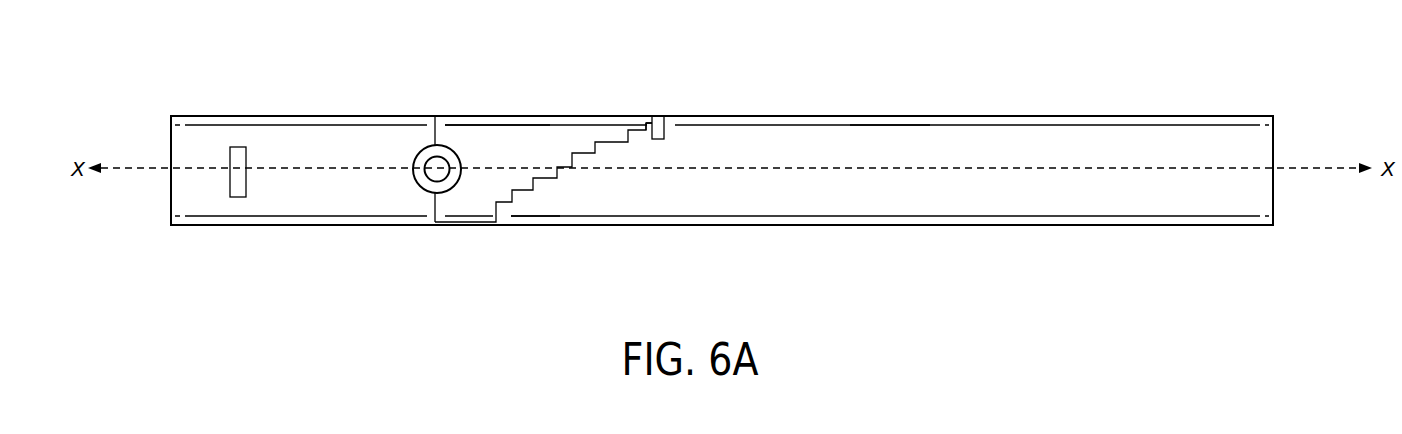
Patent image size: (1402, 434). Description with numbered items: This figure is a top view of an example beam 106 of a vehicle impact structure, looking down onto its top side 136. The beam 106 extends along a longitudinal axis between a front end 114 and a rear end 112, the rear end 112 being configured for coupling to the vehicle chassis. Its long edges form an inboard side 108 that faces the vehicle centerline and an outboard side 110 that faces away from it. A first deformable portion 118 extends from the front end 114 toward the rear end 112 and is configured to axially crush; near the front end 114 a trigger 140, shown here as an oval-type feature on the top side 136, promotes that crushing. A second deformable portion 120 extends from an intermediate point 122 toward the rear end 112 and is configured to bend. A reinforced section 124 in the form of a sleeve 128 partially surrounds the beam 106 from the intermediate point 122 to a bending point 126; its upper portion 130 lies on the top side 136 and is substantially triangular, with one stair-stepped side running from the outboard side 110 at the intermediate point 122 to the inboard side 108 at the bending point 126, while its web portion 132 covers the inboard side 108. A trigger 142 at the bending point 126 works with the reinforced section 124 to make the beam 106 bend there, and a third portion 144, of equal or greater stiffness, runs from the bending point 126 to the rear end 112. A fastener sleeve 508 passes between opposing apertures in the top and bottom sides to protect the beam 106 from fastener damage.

The beam 106 is at (1122, 128).
The inboard side 108 is at (697, 114).
The outboard side 110 is at (893, 225).
The rear end 112 is at (1273, 211).
The front end 114 is at (171, 148).
The first deformable portion 118 is at (295, 135).
The second deformable portion 120 is at (538, 208).
The intermediate point 122 is at (417, 227).
The reinforced section 124 is at (582, 178).
The bending point 126 is at (657, 116).
The sleeve 128 is at (515, 130).
The upper portion 130 is at (474, 139).
The web portion 132 is at (587, 114).
The top side 136 is at (880, 138).
The trigger 140 is at (235, 147).
The trigger 142 is at (656, 140).
The third portion 144 is at (1177, 202).
The fastener sleeve 508 is at (427, 150).